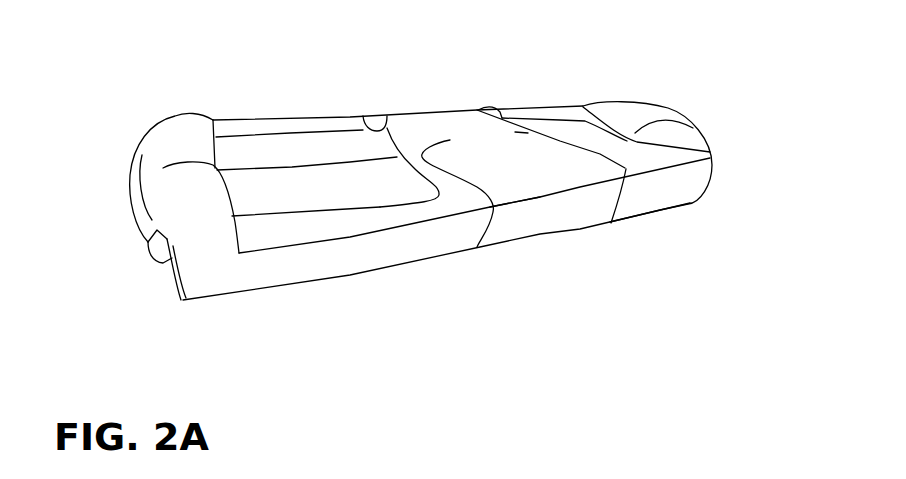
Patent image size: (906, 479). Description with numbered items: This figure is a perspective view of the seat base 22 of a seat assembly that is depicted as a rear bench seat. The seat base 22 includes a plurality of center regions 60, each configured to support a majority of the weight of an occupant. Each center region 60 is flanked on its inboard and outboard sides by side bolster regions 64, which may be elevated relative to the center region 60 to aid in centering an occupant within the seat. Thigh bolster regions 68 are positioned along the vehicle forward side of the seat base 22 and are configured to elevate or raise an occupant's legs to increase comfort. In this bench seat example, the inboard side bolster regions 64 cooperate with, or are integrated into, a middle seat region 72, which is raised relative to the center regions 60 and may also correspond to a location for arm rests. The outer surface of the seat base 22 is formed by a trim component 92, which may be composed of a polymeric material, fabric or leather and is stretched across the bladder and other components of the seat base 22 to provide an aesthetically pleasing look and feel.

The seat base 22 is at (100, 214).
The center region 60 is at (306, 183).
The side bolster region 64 is at (180, 112).
The thigh bolster region 68 is at (283, 112).
The middle seat region 72 is at (519, 164).
The trim component 92 is at (135, 183).